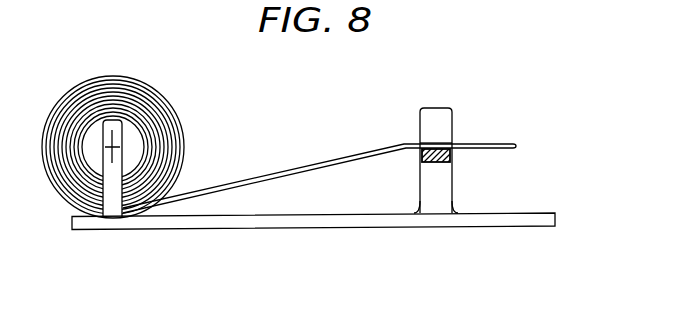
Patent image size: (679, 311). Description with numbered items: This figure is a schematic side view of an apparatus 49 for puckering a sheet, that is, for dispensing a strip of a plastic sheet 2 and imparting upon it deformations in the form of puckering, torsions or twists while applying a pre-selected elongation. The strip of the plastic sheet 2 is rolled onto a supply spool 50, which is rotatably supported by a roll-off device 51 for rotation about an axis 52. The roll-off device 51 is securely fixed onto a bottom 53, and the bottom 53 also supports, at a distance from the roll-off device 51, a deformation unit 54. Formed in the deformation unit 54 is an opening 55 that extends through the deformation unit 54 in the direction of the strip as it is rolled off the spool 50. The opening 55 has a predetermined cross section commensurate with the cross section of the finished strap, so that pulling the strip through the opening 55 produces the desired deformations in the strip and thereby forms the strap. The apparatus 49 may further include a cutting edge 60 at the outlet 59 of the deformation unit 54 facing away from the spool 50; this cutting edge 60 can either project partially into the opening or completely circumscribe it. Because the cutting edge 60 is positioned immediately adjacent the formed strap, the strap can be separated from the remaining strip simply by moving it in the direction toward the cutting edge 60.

The plastic sheet 2 is at (144, 84).
The apparatus 49 is at (268, 93).
The supply spool 50 is at (170, 123).
The roll-off device 51 is at (117, 208).
The axis 52 is at (110, 150).
The bottom 53 is at (272, 228).
The deformation unit 54 is at (430, 192).
The opening 55 is at (450, 150).
The outlet 59 is at (468, 143).
The cutting edge 60 is at (433, 143).